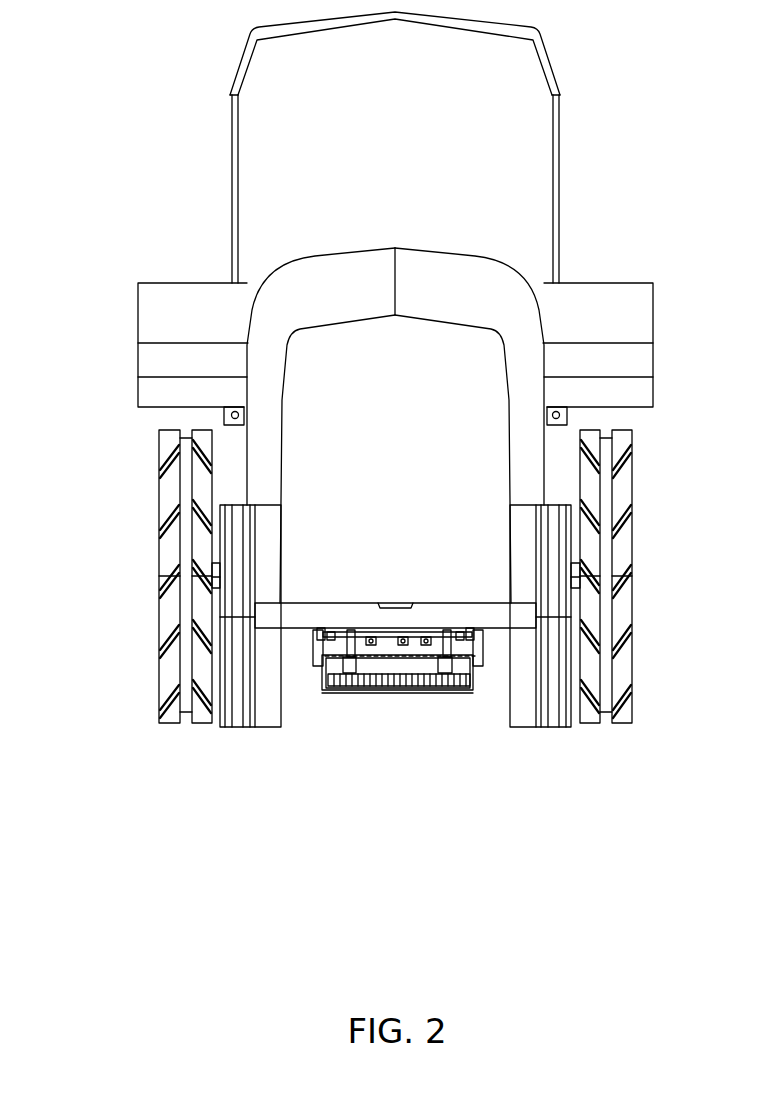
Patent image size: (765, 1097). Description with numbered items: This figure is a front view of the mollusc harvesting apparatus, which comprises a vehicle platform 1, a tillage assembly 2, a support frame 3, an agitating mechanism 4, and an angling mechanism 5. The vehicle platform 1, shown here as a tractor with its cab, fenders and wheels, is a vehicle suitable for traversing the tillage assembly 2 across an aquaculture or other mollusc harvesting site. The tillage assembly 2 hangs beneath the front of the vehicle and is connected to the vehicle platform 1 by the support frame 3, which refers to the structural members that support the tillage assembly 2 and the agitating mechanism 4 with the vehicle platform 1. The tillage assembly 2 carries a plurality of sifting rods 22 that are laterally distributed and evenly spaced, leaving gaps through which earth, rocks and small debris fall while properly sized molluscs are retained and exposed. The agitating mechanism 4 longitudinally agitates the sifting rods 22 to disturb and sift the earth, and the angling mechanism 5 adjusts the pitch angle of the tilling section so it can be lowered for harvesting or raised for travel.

The vehicle platform 1 is at (344, 397).
The tillage assembly 2 is at (398, 674).
The support frame 3 is at (451, 590).
The agitating mechanism 4 is at (386, 650).
The angling mechanism 5 is at (340, 644).
The sifting rods 22 is at (400, 684).